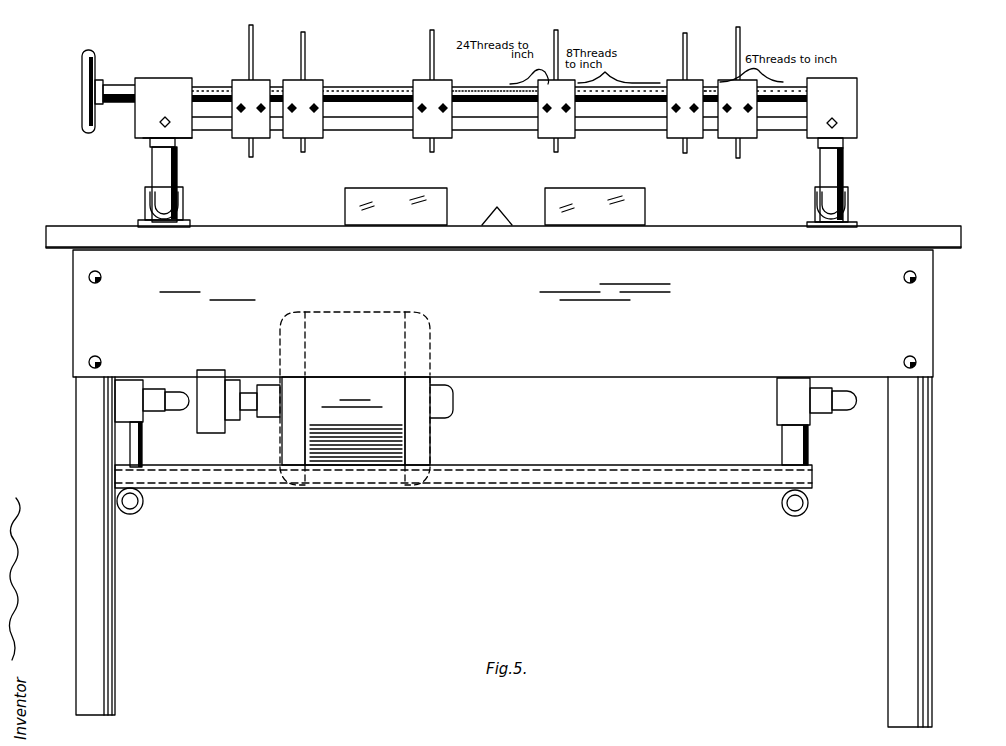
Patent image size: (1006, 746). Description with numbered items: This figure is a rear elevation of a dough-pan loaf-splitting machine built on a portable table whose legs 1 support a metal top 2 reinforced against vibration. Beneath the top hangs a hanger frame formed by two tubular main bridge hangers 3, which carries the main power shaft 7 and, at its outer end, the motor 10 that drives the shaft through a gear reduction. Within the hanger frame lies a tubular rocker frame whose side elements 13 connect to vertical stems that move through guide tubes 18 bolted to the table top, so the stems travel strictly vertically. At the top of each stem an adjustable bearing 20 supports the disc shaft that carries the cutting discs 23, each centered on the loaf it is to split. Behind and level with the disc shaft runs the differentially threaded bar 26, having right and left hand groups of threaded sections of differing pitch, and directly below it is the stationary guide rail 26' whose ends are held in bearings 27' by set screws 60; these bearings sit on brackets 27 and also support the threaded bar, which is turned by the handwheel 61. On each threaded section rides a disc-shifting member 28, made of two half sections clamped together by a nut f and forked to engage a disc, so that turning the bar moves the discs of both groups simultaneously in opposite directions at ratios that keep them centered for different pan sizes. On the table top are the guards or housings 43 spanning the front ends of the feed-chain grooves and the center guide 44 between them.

The legs 1 is at (86, 585).
The metal top 2 is at (63, 227).
The main bridge hangers 3 is at (132, 446).
The main power shaft 7 is at (918, 568).
The motor 10 is at (417, 443).
The side elements 13 is at (173, 411).
The guide tubes 18 is at (146, 197).
The adjustable bearing 20 is at (248, 42).
The cutting discs 23 is at (435, 144).
The differentially threaded bar 26 is at (499, 79).
The stationary guide rail 26' is at (499, 138).
The brackets 27 is at (499, 180).
The bearings 27' is at (495, 108).
The disc-shifting member 28 is at (311, 81).
The guard or housing 43 is at (345, 207).
The center guide 44 is at (497, 207).
The set screws 60 is at (160, 126).
The handwheel 61 is at (82, 88).
The nut f is at (183, 158).